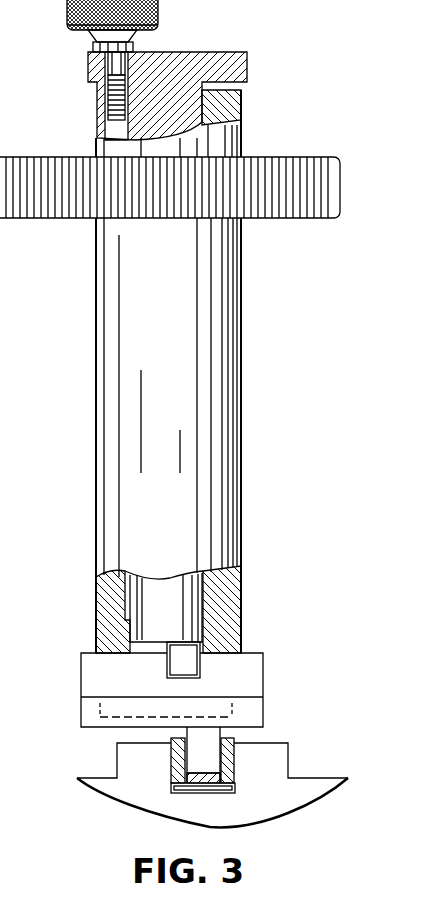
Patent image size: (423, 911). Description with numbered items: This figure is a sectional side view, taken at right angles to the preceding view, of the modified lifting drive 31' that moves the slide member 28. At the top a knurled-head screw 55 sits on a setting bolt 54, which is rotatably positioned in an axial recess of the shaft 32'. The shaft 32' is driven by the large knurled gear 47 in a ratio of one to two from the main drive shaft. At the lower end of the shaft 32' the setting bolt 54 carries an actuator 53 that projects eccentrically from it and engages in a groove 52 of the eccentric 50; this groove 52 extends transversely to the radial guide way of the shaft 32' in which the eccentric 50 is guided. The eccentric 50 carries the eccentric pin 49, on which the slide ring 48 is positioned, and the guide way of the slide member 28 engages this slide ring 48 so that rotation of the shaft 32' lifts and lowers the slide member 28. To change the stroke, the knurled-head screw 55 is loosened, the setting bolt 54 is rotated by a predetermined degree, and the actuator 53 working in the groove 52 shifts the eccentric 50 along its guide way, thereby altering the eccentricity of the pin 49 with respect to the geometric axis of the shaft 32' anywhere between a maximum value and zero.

The knurled-head screw 55 is at (67, 14).
The setting bolt 54 is at (186, 70).
The gear 47 is at (288, 170).
The shaft 32' is at (200, 371).
The actuator 53 is at (181, 655).
The groove 52 is at (196, 682).
The eccentric 50 is at (103, 676).
The eccentric pin 49 is at (203, 735).
The slide ring 48 is at (234, 764).
The slide member 28 is at (302, 788).
The lifting drive 31' is at (306, 873).